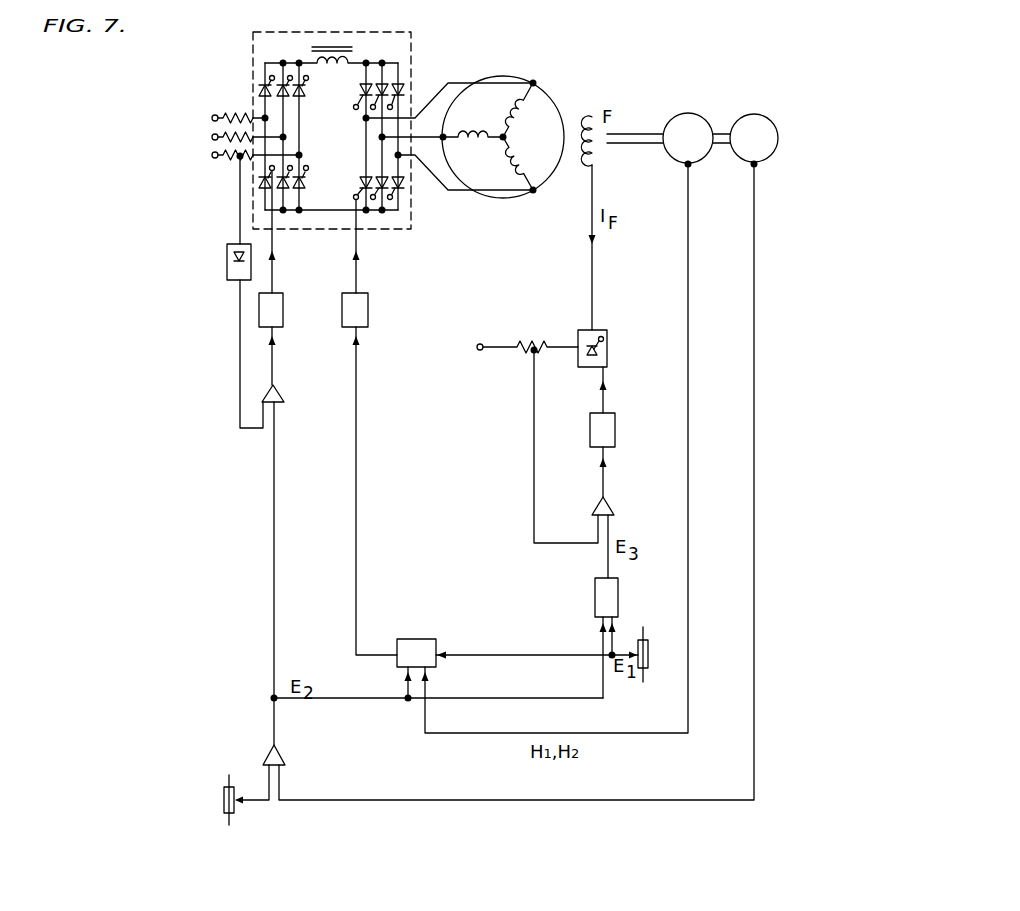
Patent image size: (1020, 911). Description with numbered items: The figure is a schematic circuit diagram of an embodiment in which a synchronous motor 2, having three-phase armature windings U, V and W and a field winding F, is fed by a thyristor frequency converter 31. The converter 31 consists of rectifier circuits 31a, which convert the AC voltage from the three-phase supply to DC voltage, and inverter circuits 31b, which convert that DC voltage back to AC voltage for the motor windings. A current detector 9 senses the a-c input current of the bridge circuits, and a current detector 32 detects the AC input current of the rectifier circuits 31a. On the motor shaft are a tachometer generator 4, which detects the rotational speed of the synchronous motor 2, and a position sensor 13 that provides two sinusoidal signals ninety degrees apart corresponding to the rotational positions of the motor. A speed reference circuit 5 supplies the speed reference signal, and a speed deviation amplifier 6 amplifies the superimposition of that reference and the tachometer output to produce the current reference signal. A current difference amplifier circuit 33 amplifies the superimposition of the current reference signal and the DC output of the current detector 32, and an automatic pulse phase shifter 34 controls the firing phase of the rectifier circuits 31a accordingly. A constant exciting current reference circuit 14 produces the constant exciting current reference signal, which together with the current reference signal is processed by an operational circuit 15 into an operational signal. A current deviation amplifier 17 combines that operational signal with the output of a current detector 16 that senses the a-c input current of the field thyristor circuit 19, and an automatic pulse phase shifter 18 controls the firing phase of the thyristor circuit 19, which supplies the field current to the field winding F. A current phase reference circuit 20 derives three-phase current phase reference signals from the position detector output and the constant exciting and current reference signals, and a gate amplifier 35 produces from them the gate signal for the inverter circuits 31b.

The synchronous motor 2 is at (512, 76).
The tachometer generator 4 is at (758, 114).
The speed reference circuit 5 is at (223, 794).
The speed deviation amplifier 6 is at (285, 753).
The current detector 9 is at (228, 162).
The position sensor 13 is at (704, 114).
The constant exciting current reference circuit 14 is at (648, 654).
The operational circuit 15 is at (773, 615).
The current detector 16 is at (530, 350).
The current deviation amplifier 17 is at (614, 503).
The automatic pulse phase shifter 18 is at (590, 434).
The thyristor circuit 19 is at (607, 354).
The current phase reference circuit 20 is at (427, 639).
The thyristor frequency converter 31 is at (359, 124).
The rectifier circuits 31a is at (333, 131).
The inverter circuits 31b is at (352, 166).
The current detector 32 is at (227, 262).
The current difference amplifier circuit 33 is at (282, 390).
The automatic pulse phase shifter 34 is at (259, 320).
The gate amplifier 35 is at (400, 294).